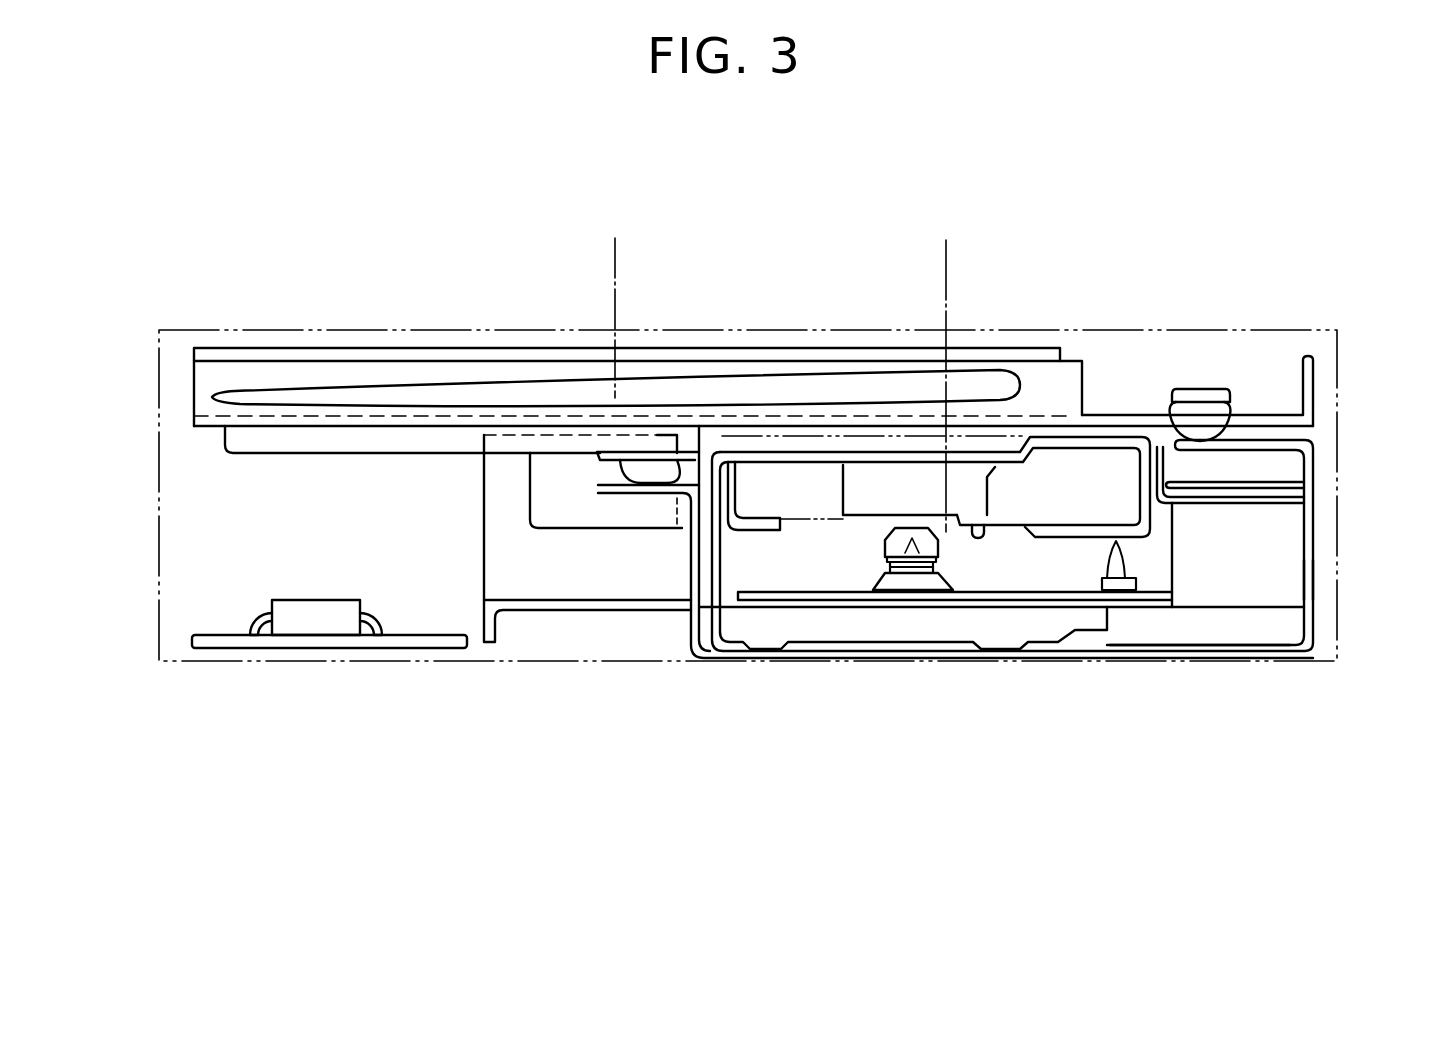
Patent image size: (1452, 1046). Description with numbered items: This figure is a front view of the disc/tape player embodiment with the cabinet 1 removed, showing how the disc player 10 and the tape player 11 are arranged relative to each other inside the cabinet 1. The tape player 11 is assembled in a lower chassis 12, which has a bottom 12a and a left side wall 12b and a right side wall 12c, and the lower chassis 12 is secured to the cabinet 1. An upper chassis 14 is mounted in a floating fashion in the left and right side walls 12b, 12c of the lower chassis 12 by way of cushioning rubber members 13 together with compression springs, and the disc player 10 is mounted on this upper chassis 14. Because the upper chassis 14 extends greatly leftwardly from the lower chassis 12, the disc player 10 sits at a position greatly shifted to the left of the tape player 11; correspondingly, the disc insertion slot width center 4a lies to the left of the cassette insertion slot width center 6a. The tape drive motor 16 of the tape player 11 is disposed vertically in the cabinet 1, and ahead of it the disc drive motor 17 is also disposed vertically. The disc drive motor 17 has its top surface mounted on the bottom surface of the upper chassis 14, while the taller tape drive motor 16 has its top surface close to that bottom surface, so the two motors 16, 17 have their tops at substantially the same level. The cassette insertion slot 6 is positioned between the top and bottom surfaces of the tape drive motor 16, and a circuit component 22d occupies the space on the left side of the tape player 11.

The cabinet 1 is at (820, 330).
The disc player 10 is at (380, 336).
The disc drive motor 17 is at (563, 470).
The cushioning rubber member 13 is at (655, 472).
The disc insertion slot width center 4a is at (617, 282).
The cassette insertion slot width center 6a is at (947, 283).
The lower chassis 12 is at (1330, 496).
The bottom 12a is at (1176, 634).
The left side wall 12b is at (1315, 558).
The right side wall 12c is at (683, 625).
The upper chassis 14 is at (1315, 364).
The cassette insertion slot 6 is at (808, 508).
The tape player 11 is at (963, 628).
The tape drive motor 16 is at (548, 592).
The circuit component 22d is at (320, 627).